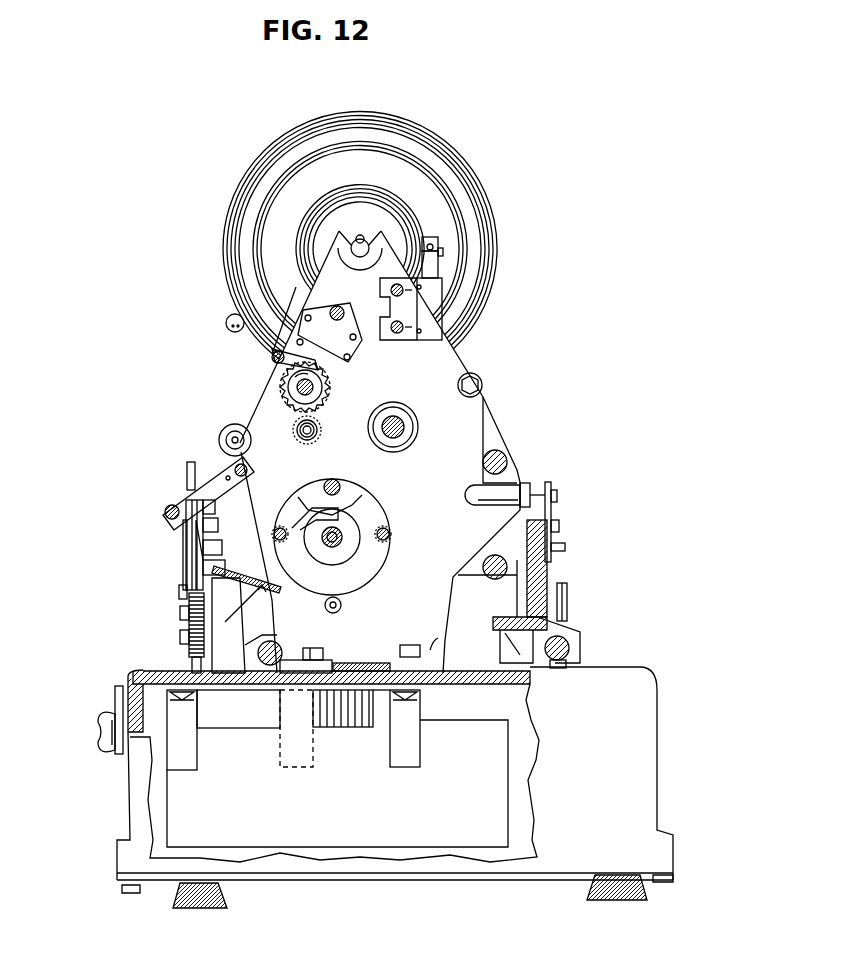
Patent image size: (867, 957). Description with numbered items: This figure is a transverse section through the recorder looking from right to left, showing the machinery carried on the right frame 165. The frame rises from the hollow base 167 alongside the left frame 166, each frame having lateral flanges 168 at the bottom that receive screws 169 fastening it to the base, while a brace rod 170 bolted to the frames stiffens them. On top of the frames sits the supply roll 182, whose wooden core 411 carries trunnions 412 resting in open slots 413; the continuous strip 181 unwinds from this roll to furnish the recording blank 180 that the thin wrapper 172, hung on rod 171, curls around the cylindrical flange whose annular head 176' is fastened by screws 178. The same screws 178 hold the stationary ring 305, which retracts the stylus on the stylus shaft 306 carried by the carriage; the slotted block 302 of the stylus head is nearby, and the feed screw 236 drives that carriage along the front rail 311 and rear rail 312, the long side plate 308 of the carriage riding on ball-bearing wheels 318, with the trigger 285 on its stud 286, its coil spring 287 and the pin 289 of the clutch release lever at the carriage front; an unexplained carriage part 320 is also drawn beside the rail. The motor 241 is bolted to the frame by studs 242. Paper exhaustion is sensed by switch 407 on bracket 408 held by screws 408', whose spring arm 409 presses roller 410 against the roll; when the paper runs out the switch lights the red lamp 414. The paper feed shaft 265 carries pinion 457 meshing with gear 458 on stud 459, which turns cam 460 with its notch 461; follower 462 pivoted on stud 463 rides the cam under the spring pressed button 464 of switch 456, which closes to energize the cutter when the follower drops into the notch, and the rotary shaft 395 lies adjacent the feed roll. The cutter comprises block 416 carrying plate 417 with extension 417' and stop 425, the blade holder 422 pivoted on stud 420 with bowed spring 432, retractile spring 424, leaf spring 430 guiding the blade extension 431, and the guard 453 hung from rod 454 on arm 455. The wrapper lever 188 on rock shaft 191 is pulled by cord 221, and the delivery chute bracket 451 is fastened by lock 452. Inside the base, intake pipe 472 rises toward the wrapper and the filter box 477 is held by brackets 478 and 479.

The supply roll 182 is at (452, 152).
The core 411 is at (322, 228).
The open slots 413 is at (359, 235).
The trunnions 412 is at (349, 250).
The continuous strip 181 is at (243, 372).
The red lamp 414 is at (226, 321).
The roller 410 is at (440, 242).
The spring arm 409 is at (436, 265).
The switch 407 is at (432, 338).
The bracket 408 is at (382, 309).
The screws 408' is at (394, 349).
The right frame 165 is at (470, 358).
The brace rod 170 is at (481, 381).
The left frame 166 is at (495, 430).
The studs 242 is at (503, 456).
The motor 241 is at (478, 543).
The pin 289 is at (548, 492).
The trigger 285 is at (552, 518).
The stud 286 is at (560, 527).
The coil spring 287 is at (566, 548).
The side plate 308 is at (528, 595).
The ball-bearing wheels 318 is at (568, 600).
The rear rail 312 is at (570, 648).
The block 320 is at (517, 640).
The switch 456 is at (337, 306).
The spring pressed button 464 is at (310, 352).
The follower 462 is at (297, 285).
The stud 463 is at (271, 357).
The notch 461 is at (318, 367).
The gear 458 is at (322, 405).
The cam 460 is at (314, 389).
The stud 459 is at (298, 391).
The pinion 457 is at (318, 436).
The paper feed shaft 265 is at (305, 440).
The rotary shaft 395 is at (228, 432).
The feed screw 236 is at (402, 436).
The stationary ring 305 is at (373, 565).
The stylus shaft 306 is at (325, 545).
The rod 171 is at (335, 480).
The annular head 176' is at (356, 493).
The slotted block 302 is at (318, 511).
The screws 178 is at (386, 530).
The rock shaft 191 is at (339, 610).
The arm 455 is at (207, 482).
The rod 454 is at (165, 510).
The extension 431 is at (186, 470).
The holder 422 is at (189, 541).
The guard 453 is at (183, 527).
The stud 420 is at (194, 573).
The stop 425 is at (210, 514).
The extension 417' is at (226, 527).
The plate 417 is at (227, 547).
The bowed spring 432 is at (225, 566).
The leaf spring 430 is at (188, 592).
The retractile spring 424 is at (190, 647).
The recording blank 180 is at (266, 592).
The block 416 is at (222, 665).
The cord 221 is at (230, 622).
The lever 188 is at (252, 642).
The wrapper 172 is at (278, 612).
The bolts or screws 169 is at (322, 650).
The lateral flanges 168 is at (325, 664).
The front rail 311 is at (290, 673).
The base 167 is at (128, 790).
The bracket 451 is at (114, 694).
The lock 452 is at (100, 740).
The filter box 477 is at (375, 806).
The bracket 479 is at (197, 760).
The bracket 478 is at (273, 722).
The metal pipe 472 is at (336, 715).